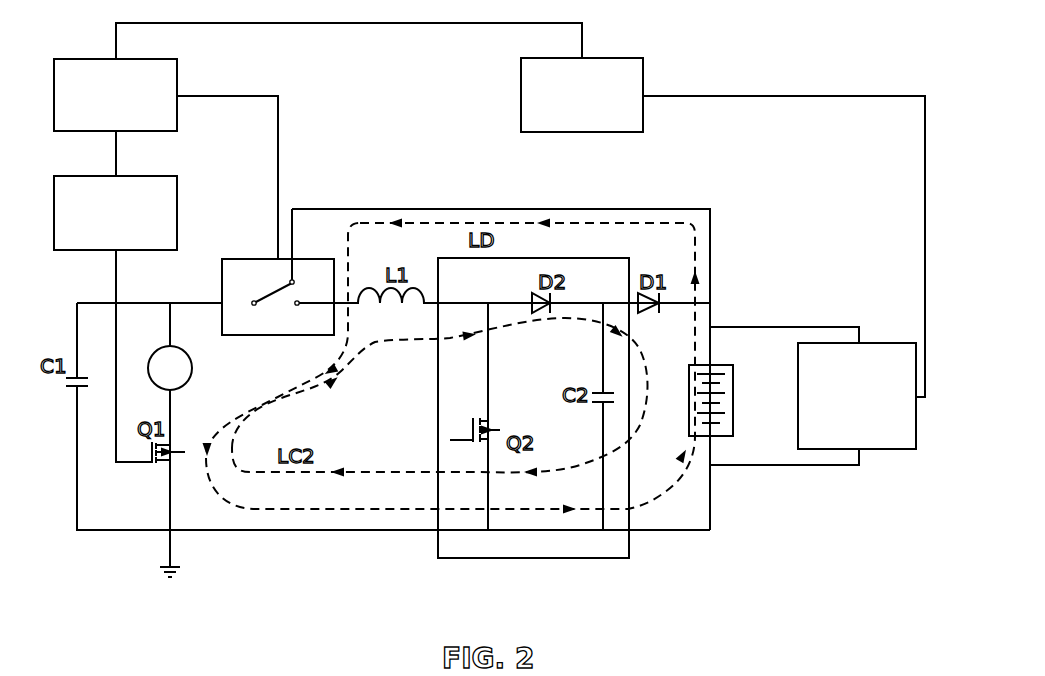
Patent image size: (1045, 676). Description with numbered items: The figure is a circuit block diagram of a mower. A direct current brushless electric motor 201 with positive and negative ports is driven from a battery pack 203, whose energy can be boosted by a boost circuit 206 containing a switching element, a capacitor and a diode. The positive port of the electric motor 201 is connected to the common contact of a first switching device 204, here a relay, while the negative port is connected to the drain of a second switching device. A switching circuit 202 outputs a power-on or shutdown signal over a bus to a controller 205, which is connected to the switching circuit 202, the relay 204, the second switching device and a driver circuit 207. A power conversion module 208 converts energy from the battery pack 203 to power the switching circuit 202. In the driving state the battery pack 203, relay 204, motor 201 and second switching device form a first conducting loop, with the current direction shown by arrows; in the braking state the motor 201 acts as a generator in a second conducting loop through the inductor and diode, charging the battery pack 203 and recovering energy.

The electric motor 201 is at (192, 366).
The switching circuit 202 is at (580, 132).
The battery pack 203 is at (733, 388).
The first switching device 204 is at (252, 258).
The controller 205 is at (178, 76).
The boost circuit 206 is at (552, 558).
The driver circuit 207 is at (178, 210).
The power conversion module 208 is at (890, 449).